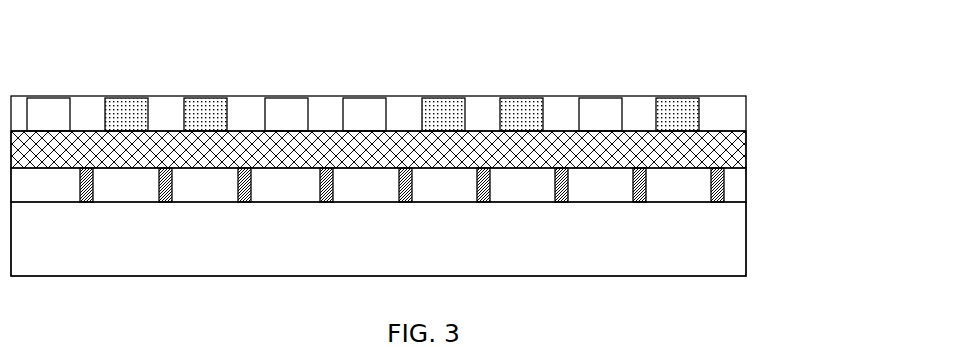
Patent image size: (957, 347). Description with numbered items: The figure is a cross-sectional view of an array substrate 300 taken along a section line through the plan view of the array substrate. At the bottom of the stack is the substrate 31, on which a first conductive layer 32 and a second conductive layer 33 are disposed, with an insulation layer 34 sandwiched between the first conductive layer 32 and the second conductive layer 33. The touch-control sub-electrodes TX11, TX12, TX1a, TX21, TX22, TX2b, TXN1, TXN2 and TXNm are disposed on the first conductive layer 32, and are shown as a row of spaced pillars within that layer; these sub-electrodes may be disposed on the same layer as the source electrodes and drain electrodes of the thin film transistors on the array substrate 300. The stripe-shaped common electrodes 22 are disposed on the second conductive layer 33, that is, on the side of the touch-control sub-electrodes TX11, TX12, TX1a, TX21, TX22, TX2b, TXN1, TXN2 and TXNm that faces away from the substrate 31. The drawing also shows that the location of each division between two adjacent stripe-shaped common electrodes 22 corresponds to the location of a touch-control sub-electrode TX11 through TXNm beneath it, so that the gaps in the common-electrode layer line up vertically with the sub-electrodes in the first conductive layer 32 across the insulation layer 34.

The array substrate 300 is at (731, 44).
The stripe-shaped common electrode 22 is at (667, 96).
The second conductive layer 33 is at (733, 117).
The insulation layer 34 is at (733, 155).
The first conductive layer 32 is at (735, 192).
The substrate 31 is at (738, 268).
The touch-control sub-electrode TX11 is at (88, 203).
The touch-control sub-electrode TX12 is at (167, 203).
The touch-control sub-electrode TX1a is at (246, 203).
The touch-control sub-electrode TX21 is at (328, 203).
The touch-control sub-electrode TX22 is at (407, 203).
The touch-control sub-electrode TX2b is at (485, 203).
The touch-control sub-electrode TXN1 is at (563, 203).
The touch-control sub-electrode TXN2 is at (641, 203).
The touch-control sub-electrode TXNm is at (720, 203).